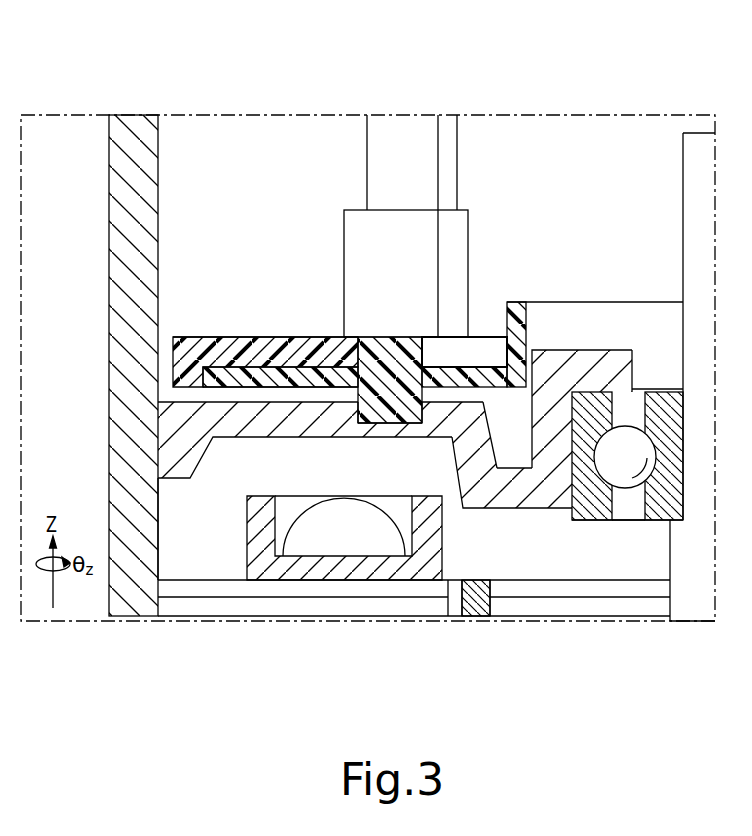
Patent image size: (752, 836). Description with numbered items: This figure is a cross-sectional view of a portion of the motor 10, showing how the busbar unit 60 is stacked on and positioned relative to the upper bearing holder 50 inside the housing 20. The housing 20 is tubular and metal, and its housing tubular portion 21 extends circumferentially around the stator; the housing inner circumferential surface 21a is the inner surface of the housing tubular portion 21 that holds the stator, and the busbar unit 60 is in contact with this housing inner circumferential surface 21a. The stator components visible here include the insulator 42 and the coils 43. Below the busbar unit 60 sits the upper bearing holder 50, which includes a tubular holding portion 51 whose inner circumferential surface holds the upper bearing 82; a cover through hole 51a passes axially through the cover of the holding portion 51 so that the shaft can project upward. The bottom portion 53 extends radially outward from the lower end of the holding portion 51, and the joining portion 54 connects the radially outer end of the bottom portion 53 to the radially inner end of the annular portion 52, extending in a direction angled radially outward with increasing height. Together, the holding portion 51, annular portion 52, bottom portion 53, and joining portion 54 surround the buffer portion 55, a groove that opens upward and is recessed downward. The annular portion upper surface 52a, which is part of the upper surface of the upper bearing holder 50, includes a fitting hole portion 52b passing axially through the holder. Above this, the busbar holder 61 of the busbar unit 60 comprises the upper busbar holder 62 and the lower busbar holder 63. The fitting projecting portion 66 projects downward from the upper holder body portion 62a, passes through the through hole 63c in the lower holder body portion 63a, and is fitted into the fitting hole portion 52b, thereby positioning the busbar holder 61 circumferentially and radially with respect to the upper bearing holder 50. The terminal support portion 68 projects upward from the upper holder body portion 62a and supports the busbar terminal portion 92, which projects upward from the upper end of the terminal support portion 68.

The motor 10 is at (645, 133).
The housing 20 is at (391, 357).
The housing tubular portion 21 is at (143, 213).
The housing inner circumferential surface 21a is at (172, 492).
The terminal support portion 68 is at (363, 248).
The busbar terminal portion 92 is at (428, 186).
The busbar holder 61 is at (339, 386).
The upper busbar holder 62 is at (265, 303).
The upper holder body portion 62a is at (263, 343).
The lower busbar holder 63 is at (341, 460).
The lower holder body portion 63a is at (232, 392).
The through hole 63c is at (405, 335).
The fitting projecting portion 66 is at (390, 398).
The busbar unit 60 is at (523, 302).
The holding portion 51 is at (595, 356).
The cover through hole 51a is at (632, 372).
The annular portion 52 is at (320, 534).
The annular portion upper surface 52a is at (347, 403).
The fitting hole portion 52b is at (403, 426).
The bottom portion 53 is at (535, 490).
The joining portion 54 is at (472, 455).
The buffer portion 55 is at (510, 444).
The upper bearing holder 50 is at (420, 473).
The upper bearing 82 is at (648, 462).
The insulator 42 is at (428, 515).
The coils 43 is at (340, 518).